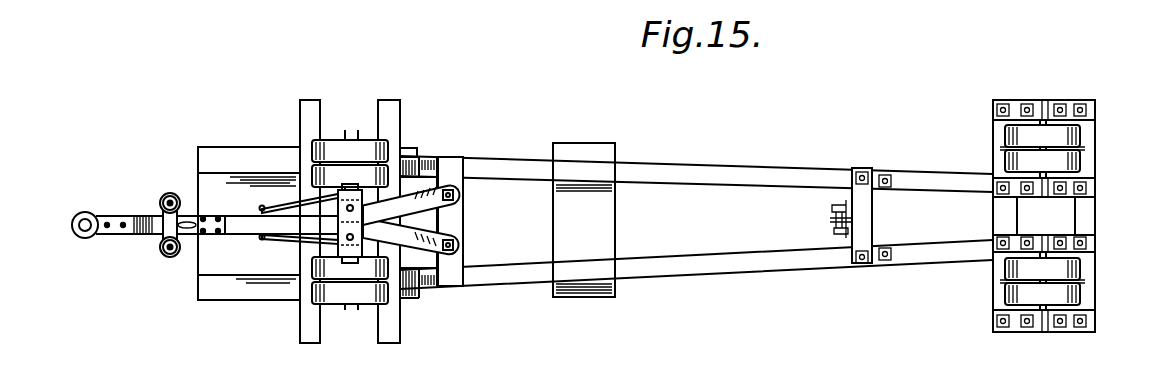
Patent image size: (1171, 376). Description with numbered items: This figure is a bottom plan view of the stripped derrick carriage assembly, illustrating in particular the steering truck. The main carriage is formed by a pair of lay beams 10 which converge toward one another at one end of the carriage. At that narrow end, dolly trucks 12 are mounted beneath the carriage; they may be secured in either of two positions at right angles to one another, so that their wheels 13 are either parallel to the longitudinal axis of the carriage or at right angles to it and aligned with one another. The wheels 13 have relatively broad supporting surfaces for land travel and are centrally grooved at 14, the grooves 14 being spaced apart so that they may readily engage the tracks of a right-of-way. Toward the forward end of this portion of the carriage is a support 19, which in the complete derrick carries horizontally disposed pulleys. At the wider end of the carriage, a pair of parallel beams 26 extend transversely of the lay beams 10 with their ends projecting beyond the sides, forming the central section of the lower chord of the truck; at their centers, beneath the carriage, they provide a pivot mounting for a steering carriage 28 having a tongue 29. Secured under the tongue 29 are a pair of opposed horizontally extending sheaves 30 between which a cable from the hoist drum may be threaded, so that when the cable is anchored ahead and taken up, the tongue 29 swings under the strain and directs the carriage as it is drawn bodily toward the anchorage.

The lay beams 10 is at (664, 178).
The dolly trucks 12 is at (1041, 104).
The wheels 13 is at (1005, 130).
The grooves 14 is at (1010, 150).
The support 19 is at (866, 215).
The parallel beams 26 is at (392, 115).
The steering carriage 28 is at (238, 246).
The tongue 29 is at (155, 224).
The sheaves 30 is at (180, 192).